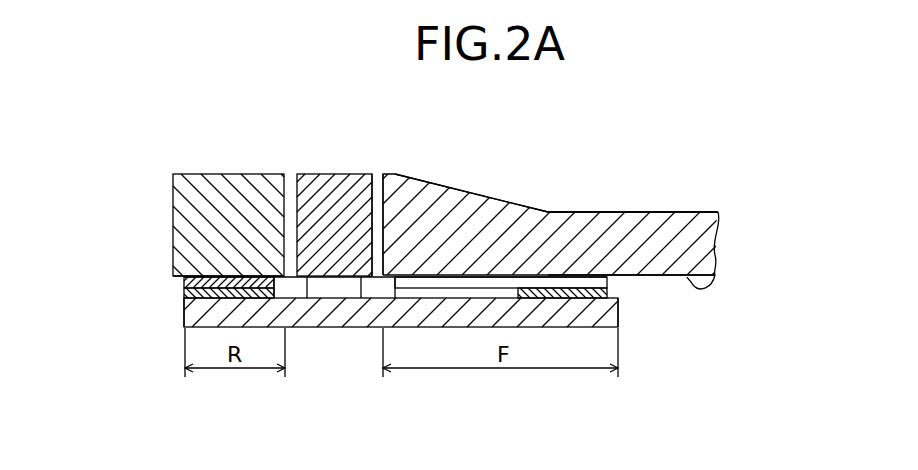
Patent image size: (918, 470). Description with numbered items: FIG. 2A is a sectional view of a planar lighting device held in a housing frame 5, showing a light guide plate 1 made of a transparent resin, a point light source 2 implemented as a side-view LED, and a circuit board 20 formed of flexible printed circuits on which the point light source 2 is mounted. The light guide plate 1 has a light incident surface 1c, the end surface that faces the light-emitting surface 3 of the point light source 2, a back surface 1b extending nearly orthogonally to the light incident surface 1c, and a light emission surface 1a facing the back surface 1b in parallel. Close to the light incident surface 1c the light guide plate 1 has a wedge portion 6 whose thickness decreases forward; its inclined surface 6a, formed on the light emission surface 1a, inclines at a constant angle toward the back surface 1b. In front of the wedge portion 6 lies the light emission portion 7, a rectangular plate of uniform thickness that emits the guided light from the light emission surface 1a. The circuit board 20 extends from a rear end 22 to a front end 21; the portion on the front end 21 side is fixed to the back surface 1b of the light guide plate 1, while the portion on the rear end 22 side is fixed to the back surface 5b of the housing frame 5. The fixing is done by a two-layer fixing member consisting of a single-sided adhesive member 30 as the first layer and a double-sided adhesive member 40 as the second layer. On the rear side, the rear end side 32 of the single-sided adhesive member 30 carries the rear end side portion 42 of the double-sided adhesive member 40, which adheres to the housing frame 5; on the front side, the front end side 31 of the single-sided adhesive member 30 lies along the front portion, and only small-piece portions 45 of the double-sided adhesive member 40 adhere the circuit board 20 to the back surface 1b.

The light guide plate 1 is at (720, 211).
The light emission surface 1a is at (678, 212).
The back surface 1b is at (703, 285).
The light incident surface 1c is at (383, 193).
The point light source 2 is at (335, 185).
The light-emitting surface 3 is at (377, 233).
The housing frame 5 is at (185, 223).
The back surface of housing frame 5b is at (182, 277).
The wedge portion 6 is at (447, 190).
The inclined surface 6a is at (502, 201).
The light emission portion 7 is at (630, 228).
The circuit board 20 is at (305, 317).
The front end 21 is at (620, 318).
The rear end 22 is at (184, 313).
The single-sided adhesive member 30 is at (406, 323).
The front end side 31 is at (608, 293).
The rear end side 32 is at (185, 293).
The double-sided adhesive member 40 is at (430, 294).
The rear end side portion 42 is at (185, 283).
The small-piece portion 45 is at (608, 283).